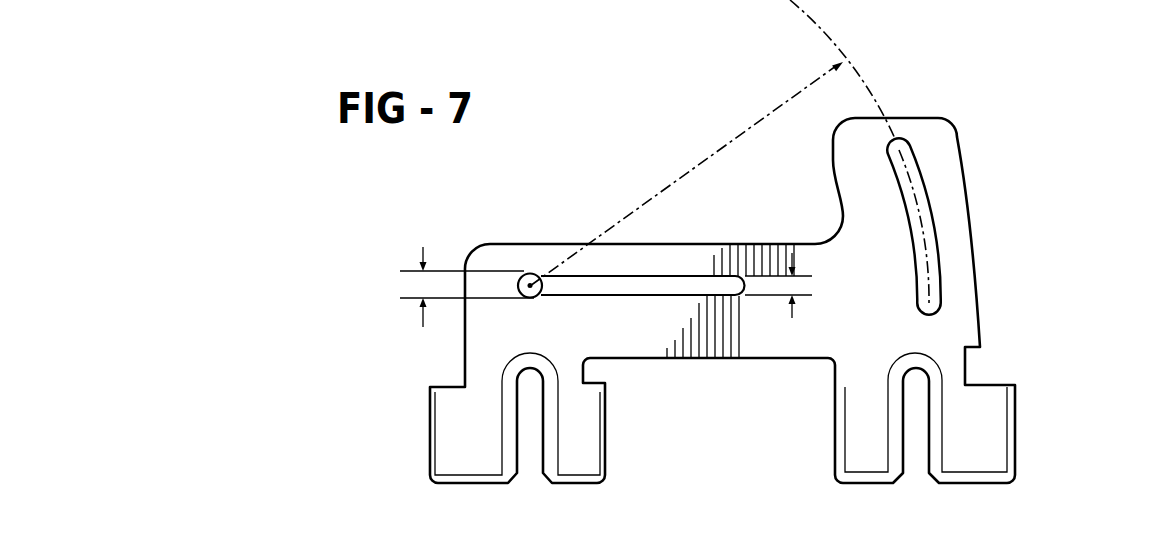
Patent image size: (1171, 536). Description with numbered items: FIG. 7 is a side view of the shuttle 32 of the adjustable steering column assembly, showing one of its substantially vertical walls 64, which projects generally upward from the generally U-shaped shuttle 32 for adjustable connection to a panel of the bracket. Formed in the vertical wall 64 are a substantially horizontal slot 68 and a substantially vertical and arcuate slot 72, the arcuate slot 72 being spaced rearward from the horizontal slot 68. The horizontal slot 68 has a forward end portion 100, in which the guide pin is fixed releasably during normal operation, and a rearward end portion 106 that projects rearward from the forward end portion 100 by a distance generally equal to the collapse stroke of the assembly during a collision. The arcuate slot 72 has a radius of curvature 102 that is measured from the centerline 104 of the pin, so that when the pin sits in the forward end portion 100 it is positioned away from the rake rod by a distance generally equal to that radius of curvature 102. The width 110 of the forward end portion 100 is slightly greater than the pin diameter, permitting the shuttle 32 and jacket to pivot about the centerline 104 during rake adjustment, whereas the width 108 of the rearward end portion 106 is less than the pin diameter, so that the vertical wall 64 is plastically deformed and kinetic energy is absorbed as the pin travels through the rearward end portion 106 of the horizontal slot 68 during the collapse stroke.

The shuttle 32 is at (970, 95).
The vertical wall 64 is at (637, 318).
The horizontal slot 68 is at (617, 283).
The arcuate slot 72 is at (910, 172).
The forward end portion 100 is at (526, 280).
The radius of curvature 102 is at (739, 136).
The centerline 104 is at (533, 277).
The rearward end portion 106 is at (715, 286).
The width 108 is at (793, 253).
The width 110 is at (423, 247).